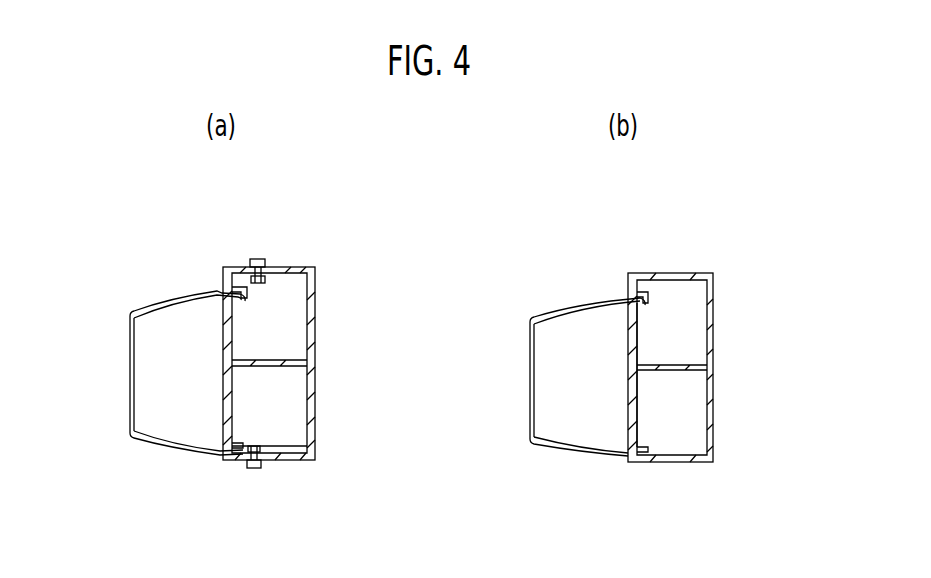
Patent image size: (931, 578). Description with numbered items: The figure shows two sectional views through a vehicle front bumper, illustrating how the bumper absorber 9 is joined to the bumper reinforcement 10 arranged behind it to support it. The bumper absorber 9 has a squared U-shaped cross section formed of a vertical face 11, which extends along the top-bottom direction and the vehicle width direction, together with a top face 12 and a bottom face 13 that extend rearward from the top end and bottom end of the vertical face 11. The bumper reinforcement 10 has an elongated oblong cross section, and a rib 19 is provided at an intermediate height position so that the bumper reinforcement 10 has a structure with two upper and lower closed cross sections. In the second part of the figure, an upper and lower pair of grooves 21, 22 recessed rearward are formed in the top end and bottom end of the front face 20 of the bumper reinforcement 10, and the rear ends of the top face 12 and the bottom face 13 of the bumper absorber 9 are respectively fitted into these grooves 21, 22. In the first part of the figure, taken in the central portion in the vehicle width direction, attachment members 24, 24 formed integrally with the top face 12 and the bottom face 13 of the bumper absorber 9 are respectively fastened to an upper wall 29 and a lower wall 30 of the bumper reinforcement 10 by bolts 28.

The bumper absorber 9 is at (350, 369).
The bumper reinforcement 10 is at (317, 290).
The vertical face 11 is at (128, 374).
The top face 12 is at (197, 292).
The bottom face 13 is at (178, 453).
The rib 19 is at (688, 370).
The front face 20 is at (627, 387).
The groove 21 is at (648, 279).
The groove 22 is at (641, 449).
The attachment member 24 is at (230, 267).
The bolt 28 is at (257, 259).
The upper wall 29 is at (298, 268).
The lower wall 30 is at (295, 461).